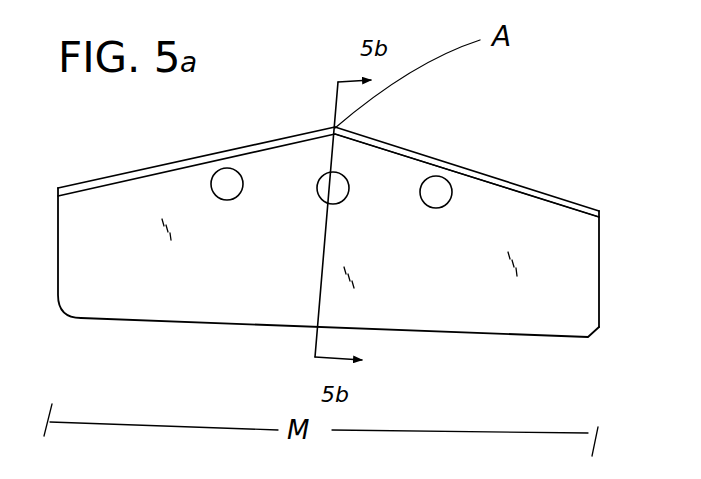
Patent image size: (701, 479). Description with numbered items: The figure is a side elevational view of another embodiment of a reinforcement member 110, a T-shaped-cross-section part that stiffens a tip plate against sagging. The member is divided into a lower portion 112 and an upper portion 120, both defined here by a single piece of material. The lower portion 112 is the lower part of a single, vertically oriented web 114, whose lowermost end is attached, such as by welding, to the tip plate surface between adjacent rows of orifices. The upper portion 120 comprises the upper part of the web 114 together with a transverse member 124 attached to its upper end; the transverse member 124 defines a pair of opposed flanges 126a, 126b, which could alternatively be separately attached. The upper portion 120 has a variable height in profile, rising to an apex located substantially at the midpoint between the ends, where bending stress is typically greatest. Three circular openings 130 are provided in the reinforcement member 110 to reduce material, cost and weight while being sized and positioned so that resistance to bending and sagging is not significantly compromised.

The reinforcement member 110 is at (502, 138).
The lower portion 112 is at (607, 347).
The web 114 is at (193, 282).
The upper portion 120 is at (635, 140).
The transverse member 124 is at (403, 152).
The flange 126a is at (205, 162).
The flange 126b is at (437, 148).
The openings 130 is at (236, 199).